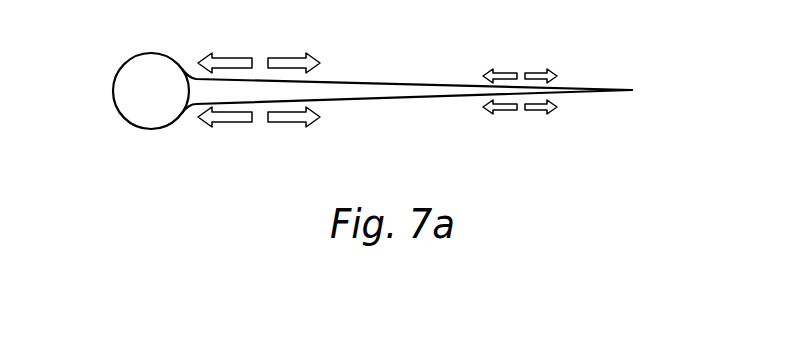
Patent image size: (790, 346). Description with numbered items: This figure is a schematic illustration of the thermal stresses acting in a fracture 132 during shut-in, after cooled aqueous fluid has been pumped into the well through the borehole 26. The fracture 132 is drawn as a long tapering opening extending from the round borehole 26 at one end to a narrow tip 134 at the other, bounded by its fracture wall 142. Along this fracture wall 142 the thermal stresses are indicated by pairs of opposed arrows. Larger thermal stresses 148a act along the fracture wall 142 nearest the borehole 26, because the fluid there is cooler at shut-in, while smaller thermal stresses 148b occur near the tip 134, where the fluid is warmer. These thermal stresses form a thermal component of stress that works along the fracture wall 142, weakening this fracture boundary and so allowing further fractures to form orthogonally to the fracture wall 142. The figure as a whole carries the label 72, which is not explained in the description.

The deformable member / device 72 is at (102, 63).
The borehole 26 is at (153, 108).
The fracture 132 is at (400, 82).
The fracture wall 142 is at (362, 101).
The tip 134 is at (632, 90).
The larger thermal stresses 148a is at (288, 58).
The smaller thermal stresses 148b is at (540, 69).